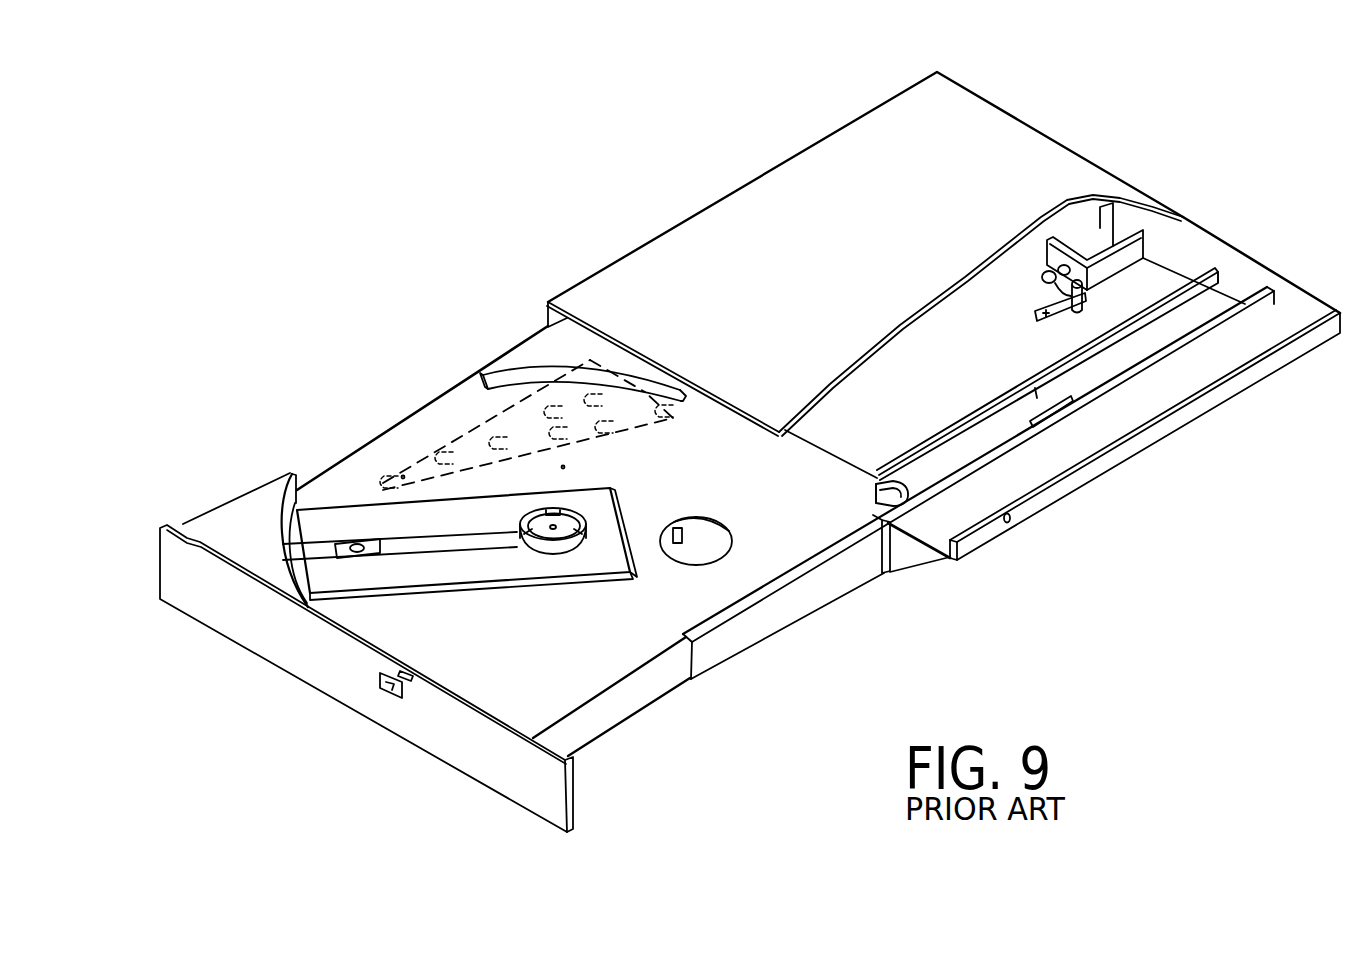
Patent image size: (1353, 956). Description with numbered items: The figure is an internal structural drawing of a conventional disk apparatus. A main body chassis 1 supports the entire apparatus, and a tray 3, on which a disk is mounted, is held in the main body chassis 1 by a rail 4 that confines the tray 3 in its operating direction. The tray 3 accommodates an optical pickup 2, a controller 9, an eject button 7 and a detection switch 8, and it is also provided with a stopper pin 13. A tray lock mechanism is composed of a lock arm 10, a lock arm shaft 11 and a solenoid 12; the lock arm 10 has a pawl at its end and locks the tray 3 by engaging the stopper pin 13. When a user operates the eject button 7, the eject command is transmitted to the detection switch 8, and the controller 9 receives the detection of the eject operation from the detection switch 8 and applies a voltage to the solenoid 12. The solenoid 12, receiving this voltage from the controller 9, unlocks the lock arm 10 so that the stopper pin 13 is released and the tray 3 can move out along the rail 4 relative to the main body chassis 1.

The main body chassis 1 is at (1016, 135).
The optical pickup 2 is at (318, 518).
The tray 3 is at (497, 687).
The rail 4 is at (812, 592).
The eject button 7 is at (385, 692).
The detection switch 8 is at (403, 680).
The controller 9 is at (462, 432).
The lock arm 10 is at (1045, 320).
The lock arm shaft 11 is at (1080, 310).
The solenoid 12 is at (1120, 224).
The stopper pin 13 is at (700, 548).